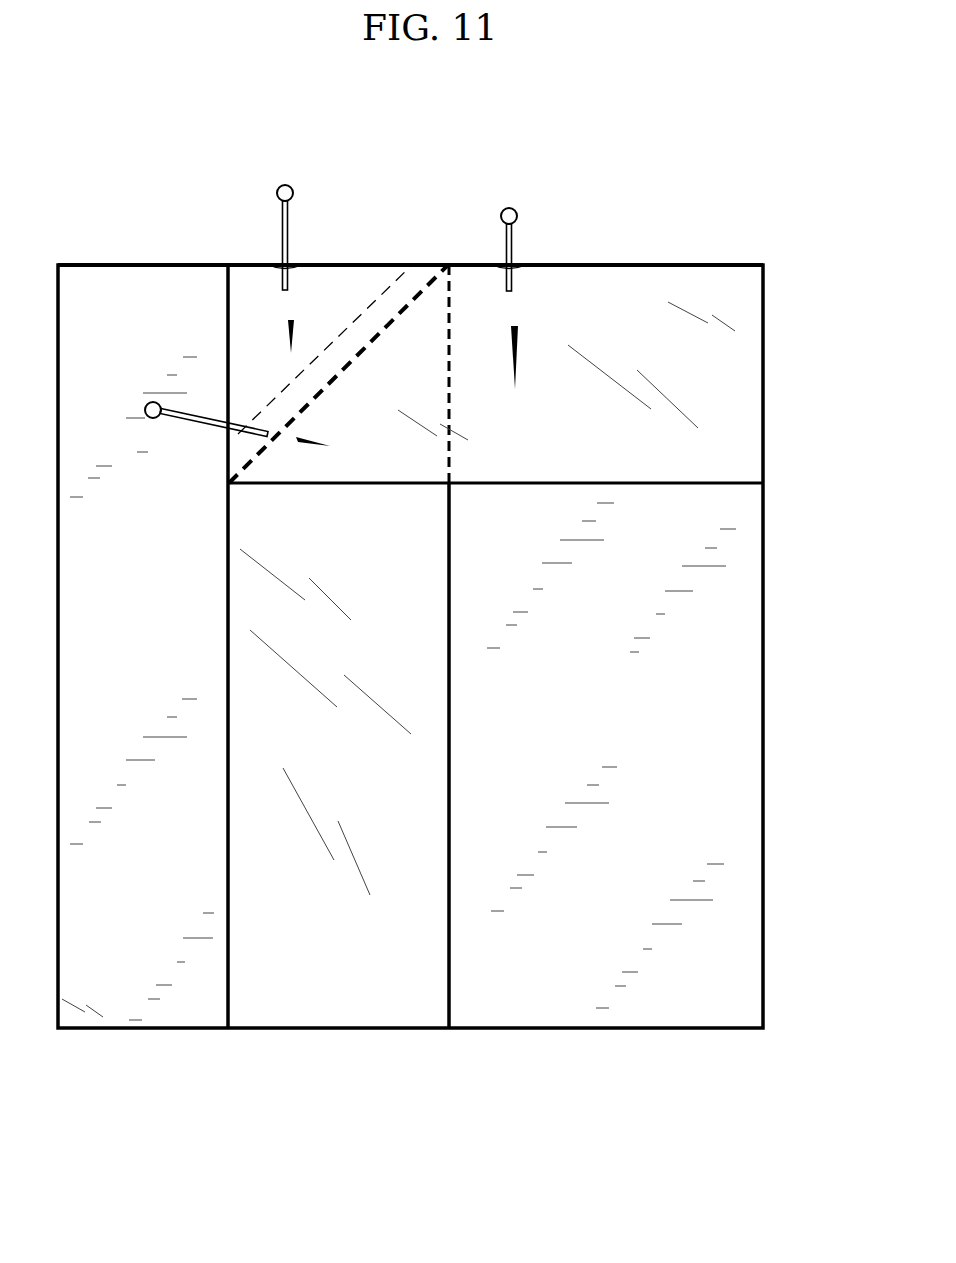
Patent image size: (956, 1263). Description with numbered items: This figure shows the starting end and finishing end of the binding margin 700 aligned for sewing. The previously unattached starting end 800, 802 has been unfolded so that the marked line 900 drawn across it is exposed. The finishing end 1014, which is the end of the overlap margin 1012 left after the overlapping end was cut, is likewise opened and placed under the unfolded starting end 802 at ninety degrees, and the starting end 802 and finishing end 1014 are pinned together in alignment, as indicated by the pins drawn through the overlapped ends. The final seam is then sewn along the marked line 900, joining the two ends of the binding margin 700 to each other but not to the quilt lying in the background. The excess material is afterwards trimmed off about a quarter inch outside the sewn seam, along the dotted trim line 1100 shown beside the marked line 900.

The binding margin 700 is at (439, 635).
The side panel 800 is at (144, 660).
The starting end 802 is at (144, 660).
The marked line 900 is at (355, 362).
The overlap margin 1012 is at (386, 535).
The finishing end 1014 is at (374, 258).
The trim line 1100 is at (262, 410).